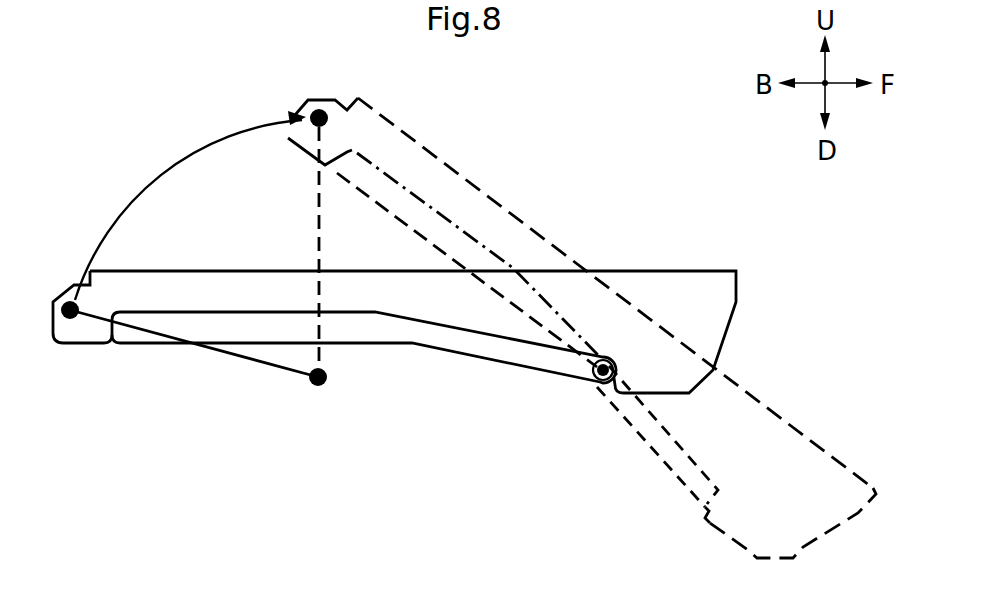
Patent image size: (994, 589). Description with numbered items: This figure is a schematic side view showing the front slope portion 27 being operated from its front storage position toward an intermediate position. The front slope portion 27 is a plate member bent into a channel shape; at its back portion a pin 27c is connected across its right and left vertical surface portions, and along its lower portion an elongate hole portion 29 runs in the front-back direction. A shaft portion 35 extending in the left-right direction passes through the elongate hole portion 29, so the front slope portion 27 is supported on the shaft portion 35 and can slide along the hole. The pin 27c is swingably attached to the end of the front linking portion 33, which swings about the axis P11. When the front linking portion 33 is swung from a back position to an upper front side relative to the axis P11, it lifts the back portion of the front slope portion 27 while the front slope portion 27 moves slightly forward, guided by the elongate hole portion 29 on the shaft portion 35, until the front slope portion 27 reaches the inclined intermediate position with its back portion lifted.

The front slope portion 27 is at (640, 270).
The pin 27c is at (310, 112).
The elongate hole portion 29 is at (437, 347).
The front linking portion 33 is at (318, 248).
The shaft portion 35 is at (598, 385).
The axis P11 is at (319, 387).